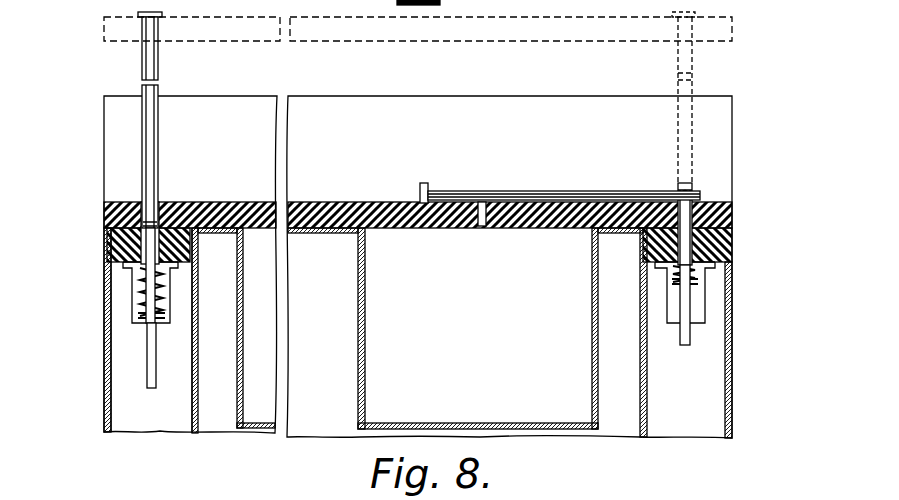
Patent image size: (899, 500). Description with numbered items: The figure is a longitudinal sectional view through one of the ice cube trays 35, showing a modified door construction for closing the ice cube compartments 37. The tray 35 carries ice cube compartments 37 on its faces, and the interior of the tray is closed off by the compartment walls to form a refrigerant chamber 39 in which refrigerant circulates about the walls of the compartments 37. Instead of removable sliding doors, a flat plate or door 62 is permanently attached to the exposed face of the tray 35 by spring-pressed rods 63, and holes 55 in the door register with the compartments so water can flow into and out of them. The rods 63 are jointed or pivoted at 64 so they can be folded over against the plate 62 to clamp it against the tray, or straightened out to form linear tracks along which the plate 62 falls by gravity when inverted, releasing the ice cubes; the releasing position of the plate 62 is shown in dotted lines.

The ice cube tray 35 is at (192, 405).
The ice cube compartment 37 is at (566, 415).
The refrigerant chamber 39 is at (625, 386).
The hole 55 is at (479, 230).
The plate 62 is at (560, 43).
The spring-pressed rod 63 is at (158, 148).
The joint 64 is at (108, 247).